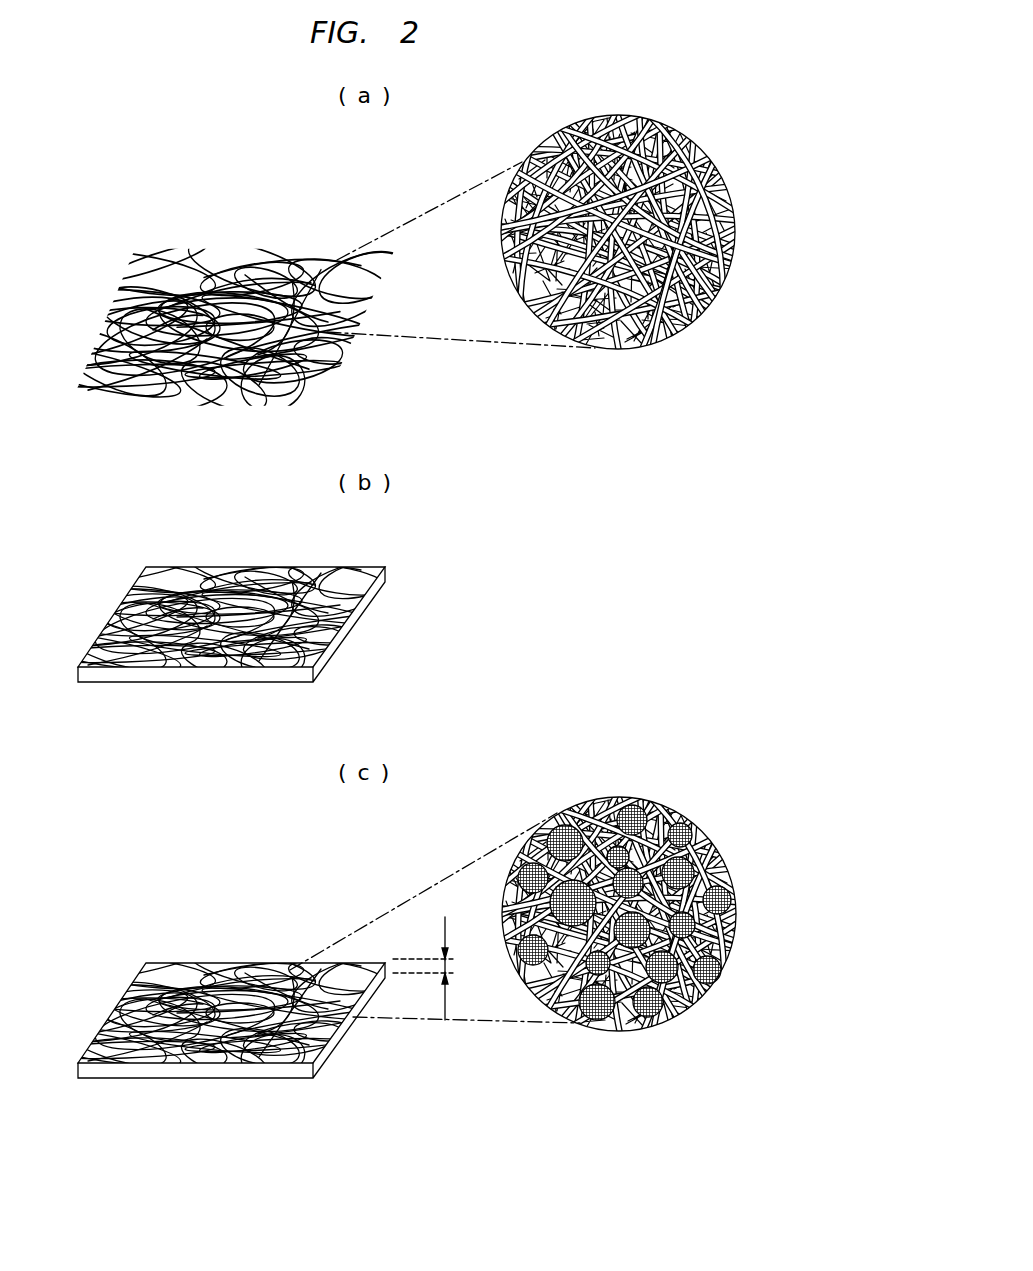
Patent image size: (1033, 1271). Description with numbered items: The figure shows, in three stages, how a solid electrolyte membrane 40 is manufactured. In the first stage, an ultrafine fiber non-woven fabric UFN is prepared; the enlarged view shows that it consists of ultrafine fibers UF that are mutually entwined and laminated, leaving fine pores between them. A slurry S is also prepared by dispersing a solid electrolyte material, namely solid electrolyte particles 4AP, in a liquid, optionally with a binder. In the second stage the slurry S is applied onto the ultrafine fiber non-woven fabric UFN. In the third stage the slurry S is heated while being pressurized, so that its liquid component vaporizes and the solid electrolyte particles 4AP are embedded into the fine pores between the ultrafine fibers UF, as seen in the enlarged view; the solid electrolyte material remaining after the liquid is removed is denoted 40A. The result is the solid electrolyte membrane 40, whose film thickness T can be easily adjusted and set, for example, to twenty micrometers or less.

The ultrafine fiber non-woven fabric UFN is at (397, 600).
The ultrafine fibers UF is at (313, 363).
The slurry S is at (137, 603).
The solid electrolyte membrane 40 is at (231, 954).
The solid electrolyte material 40A is at (270, 880).
The solid electrolyte particles 4AP is at (725, 806).
The film thickness T is at (434, 968).